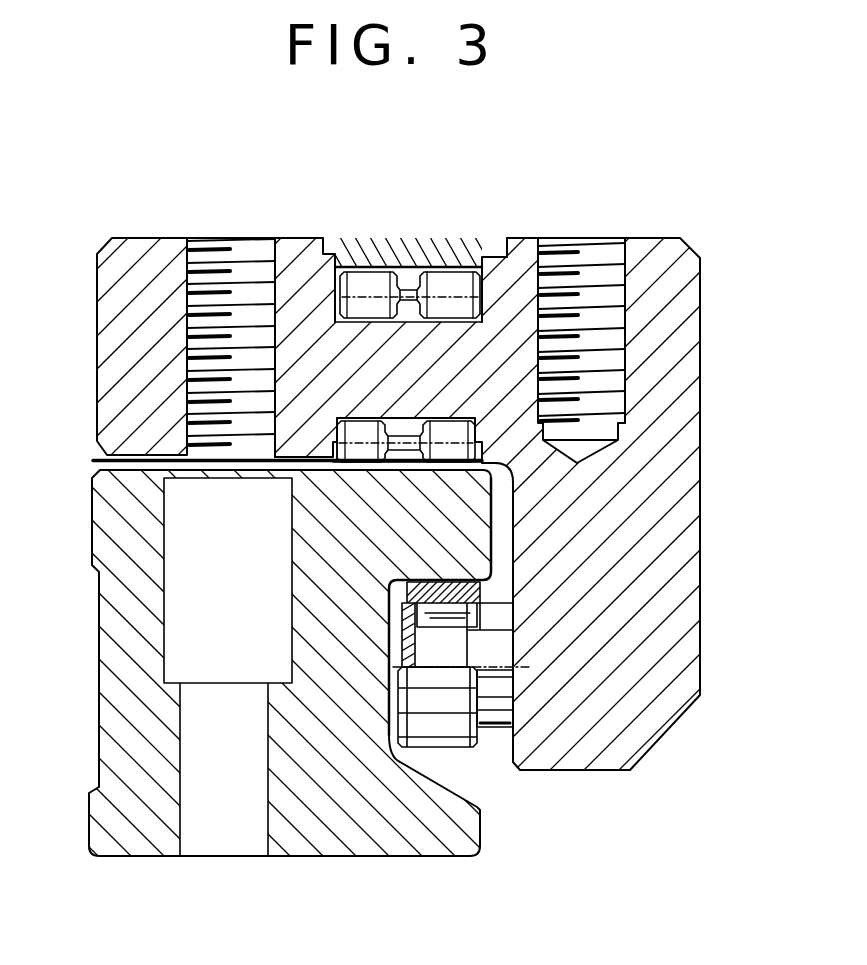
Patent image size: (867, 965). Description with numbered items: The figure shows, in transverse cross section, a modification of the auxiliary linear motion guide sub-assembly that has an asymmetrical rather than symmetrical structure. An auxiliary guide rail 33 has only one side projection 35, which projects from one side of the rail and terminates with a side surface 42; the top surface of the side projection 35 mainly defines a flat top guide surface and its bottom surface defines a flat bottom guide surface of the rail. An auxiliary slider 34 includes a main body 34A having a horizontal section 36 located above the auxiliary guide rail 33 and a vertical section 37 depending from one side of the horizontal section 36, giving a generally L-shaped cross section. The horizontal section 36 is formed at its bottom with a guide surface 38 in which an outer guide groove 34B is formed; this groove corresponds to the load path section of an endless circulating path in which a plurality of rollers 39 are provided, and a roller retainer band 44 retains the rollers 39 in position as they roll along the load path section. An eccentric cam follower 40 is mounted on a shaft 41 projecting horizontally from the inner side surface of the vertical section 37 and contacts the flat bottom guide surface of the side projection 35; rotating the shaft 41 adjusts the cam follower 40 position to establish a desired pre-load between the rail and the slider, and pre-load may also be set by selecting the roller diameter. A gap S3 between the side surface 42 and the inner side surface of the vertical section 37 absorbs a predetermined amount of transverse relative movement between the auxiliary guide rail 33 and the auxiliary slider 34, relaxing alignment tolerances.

The auxiliary guide rail 33 is at (388, 838).
The auxiliary slider 34 is at (298, 255).
The main body 34A is at (307, 330).
The outer guide groove 34B is at (370, 420).
The side projection 35 is at (482, 522).
The horizontal section 36 is at (152, 267).
The vertical section 37 is at (670, 658).
The guide surface 38 is at (120, 462).
The rollers 39 is at (458, 432).
The eccentric cam follower 40 is at (453, 727).
The shaft 41 is at (513, 733).
The side surface 42 is at (520, 492).
The roller retainer band 44 is at (397, 475).
The gap S3 is at (505, 558).